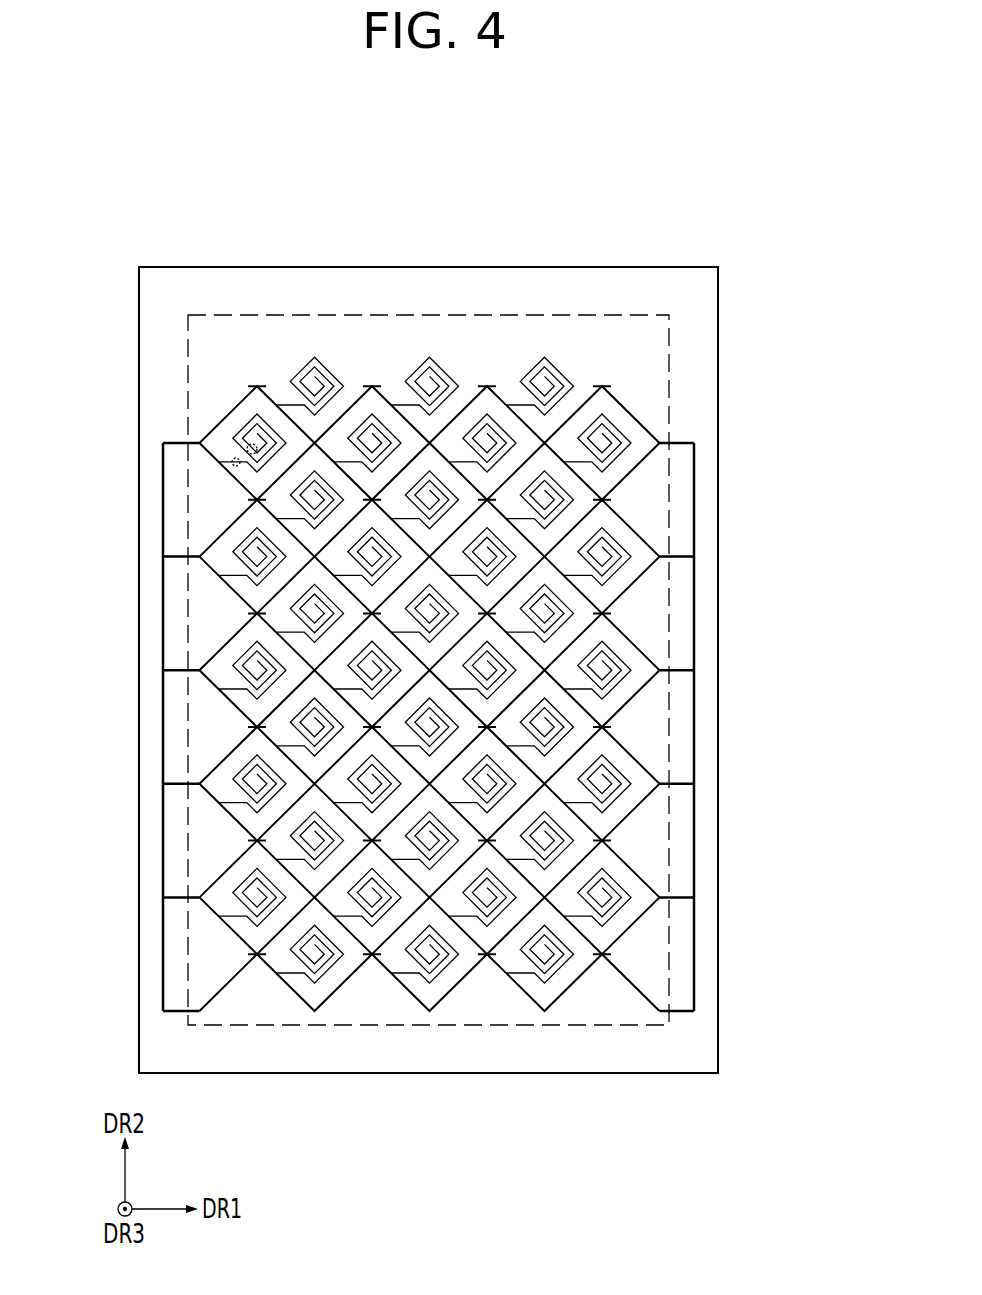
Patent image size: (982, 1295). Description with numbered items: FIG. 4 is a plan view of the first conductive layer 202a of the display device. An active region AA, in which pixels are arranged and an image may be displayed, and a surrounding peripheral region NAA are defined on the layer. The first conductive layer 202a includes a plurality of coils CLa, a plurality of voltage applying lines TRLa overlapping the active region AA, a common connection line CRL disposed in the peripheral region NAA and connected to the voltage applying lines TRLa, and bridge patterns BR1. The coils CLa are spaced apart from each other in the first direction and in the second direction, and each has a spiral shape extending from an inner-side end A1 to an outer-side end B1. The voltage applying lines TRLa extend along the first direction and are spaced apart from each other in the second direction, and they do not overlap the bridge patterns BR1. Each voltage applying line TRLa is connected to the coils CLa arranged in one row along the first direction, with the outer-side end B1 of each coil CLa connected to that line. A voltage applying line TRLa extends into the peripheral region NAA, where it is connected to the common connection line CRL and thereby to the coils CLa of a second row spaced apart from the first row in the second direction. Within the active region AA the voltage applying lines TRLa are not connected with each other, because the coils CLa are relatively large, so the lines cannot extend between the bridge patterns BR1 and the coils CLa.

The first conductive layer 202a is at (678, 217).
The active region AA is at (493, 333).
The peripheral region NAA is at (693, 297).
The common connection line CRL is at (163, 617).
The voltage applying line TRLa is at (635, 522).
The coil CLa is at (618, 423).
The bridge pattern BR1 is at (602, 492).
The inner-side end A1 is at (250, 444).
The outer-side end B1 is at (236, 466).